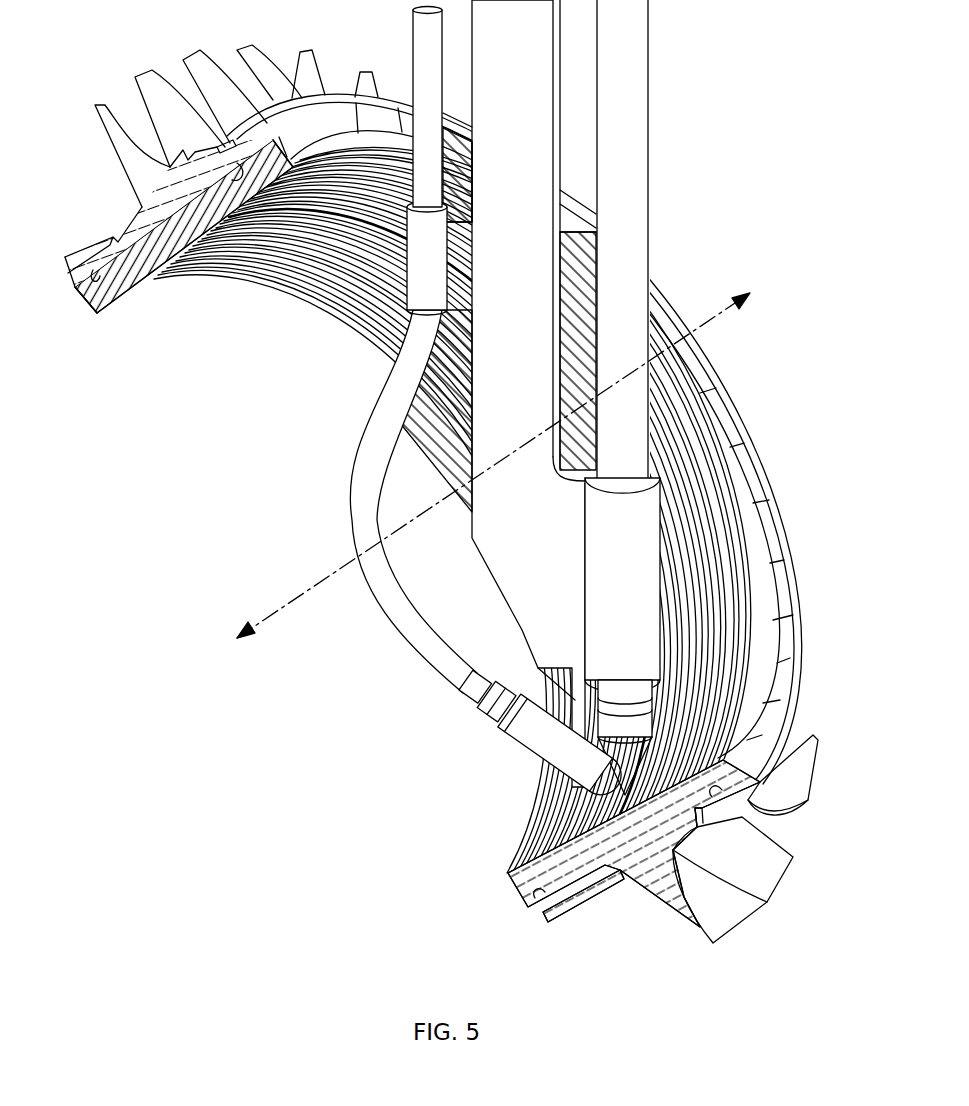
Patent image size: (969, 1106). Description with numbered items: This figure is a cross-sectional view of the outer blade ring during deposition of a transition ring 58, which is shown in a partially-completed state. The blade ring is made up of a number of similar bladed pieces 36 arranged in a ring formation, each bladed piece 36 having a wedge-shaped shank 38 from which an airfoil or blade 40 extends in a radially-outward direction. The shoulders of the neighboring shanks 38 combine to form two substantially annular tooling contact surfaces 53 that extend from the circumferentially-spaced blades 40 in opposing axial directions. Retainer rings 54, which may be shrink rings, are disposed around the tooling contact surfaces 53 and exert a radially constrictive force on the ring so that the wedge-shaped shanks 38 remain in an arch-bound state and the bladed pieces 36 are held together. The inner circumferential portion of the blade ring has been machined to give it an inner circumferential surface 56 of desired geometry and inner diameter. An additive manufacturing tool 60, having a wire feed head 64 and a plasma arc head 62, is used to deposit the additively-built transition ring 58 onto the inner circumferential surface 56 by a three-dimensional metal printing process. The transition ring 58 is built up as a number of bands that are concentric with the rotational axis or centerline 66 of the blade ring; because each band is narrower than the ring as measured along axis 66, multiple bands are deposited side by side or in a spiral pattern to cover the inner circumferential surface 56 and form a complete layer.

The bladed piece 36 is at (752, 932).
The shank 38 is at (775, 538).
The blade 40 is at (243, 50).
The tooling contact surfaces 53 is at (535, 898).
The retainer rings 54 is at (575, 922).
The inner circumferential surface 56 is at (633, 815).
The transition ring 58 is at (292, 328).
The additive manufacturing tool 60 is at (644, 127).
The plasma arc head 62 is at (667, 598).
The wire feed head 64 is at (517, 768).
The rotational axis or centerline 66 is at (295, 600).